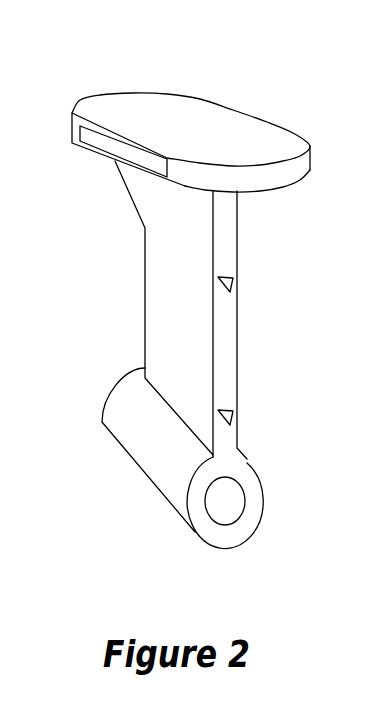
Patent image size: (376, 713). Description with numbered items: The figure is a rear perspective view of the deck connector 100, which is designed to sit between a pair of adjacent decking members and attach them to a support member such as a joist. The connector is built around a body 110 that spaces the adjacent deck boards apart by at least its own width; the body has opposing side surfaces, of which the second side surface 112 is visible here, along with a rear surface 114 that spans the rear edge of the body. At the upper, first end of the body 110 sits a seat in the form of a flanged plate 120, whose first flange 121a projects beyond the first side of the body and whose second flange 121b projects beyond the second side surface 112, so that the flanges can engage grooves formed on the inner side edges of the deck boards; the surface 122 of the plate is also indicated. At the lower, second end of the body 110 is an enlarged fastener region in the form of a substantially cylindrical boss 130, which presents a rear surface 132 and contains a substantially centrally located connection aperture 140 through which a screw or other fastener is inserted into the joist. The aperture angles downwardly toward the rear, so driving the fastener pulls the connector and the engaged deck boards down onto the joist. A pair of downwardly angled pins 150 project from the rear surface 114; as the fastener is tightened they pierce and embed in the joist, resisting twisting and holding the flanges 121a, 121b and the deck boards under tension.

The deck connector 100 is at (104, 73).
The body 110 is at (110, 267).
The second side surface 112 is at (155, 312).
The rear surface 114 is at (230, 350).
The flanged plate 120 is at (235, 79).
The first flange 121a is at (265, 117).
The second flange 121b is at (113, 148).
The cap top surface 122 is at (153, 102).
The boss 130 is at (122, 492).
The rear surface of the boss 132 is at (257, 473).
The connection aperture 140 is at (223, 500).
The pins 150 is at (237, 282).